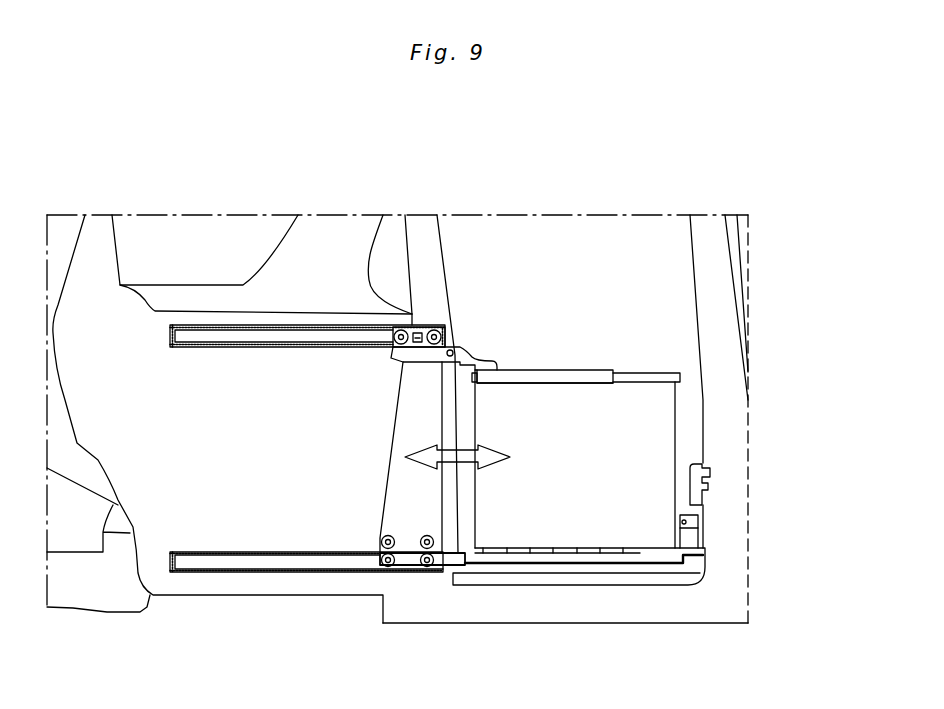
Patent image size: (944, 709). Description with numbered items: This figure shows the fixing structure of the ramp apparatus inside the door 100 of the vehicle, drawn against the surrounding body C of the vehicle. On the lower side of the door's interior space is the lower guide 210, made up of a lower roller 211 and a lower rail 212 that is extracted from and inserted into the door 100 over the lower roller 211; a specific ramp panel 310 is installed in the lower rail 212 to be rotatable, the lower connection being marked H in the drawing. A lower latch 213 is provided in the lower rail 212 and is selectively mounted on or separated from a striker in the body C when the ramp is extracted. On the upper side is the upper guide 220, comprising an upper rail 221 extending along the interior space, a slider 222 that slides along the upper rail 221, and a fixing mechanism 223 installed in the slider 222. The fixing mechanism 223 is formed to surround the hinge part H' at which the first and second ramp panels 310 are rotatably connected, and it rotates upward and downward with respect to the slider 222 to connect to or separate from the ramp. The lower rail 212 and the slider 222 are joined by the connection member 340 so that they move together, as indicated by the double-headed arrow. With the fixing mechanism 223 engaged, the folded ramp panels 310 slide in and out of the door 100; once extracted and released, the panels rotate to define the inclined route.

The door 100 is at (425, 240).
The lower guide 210 is at (383, 578).
The lower roller 211 is at (428, 567).
The lower rail 212 is at (458, 561).
The lower latch 213 is at (697, 520).
The upper guide 220 is at (373, 312).
The upper rail 221 is at (265, 347).
The slider 222 is at (425, 355).
The fixing mechanism 223 is at (478, 363).
The ramp panel 310 is at (657, 432).
The connection member 340 is at (402, 490).
The body C is at (722, 303).
The lower rail position H is at (579, 622).
The hinge part H' is at (584, 262).